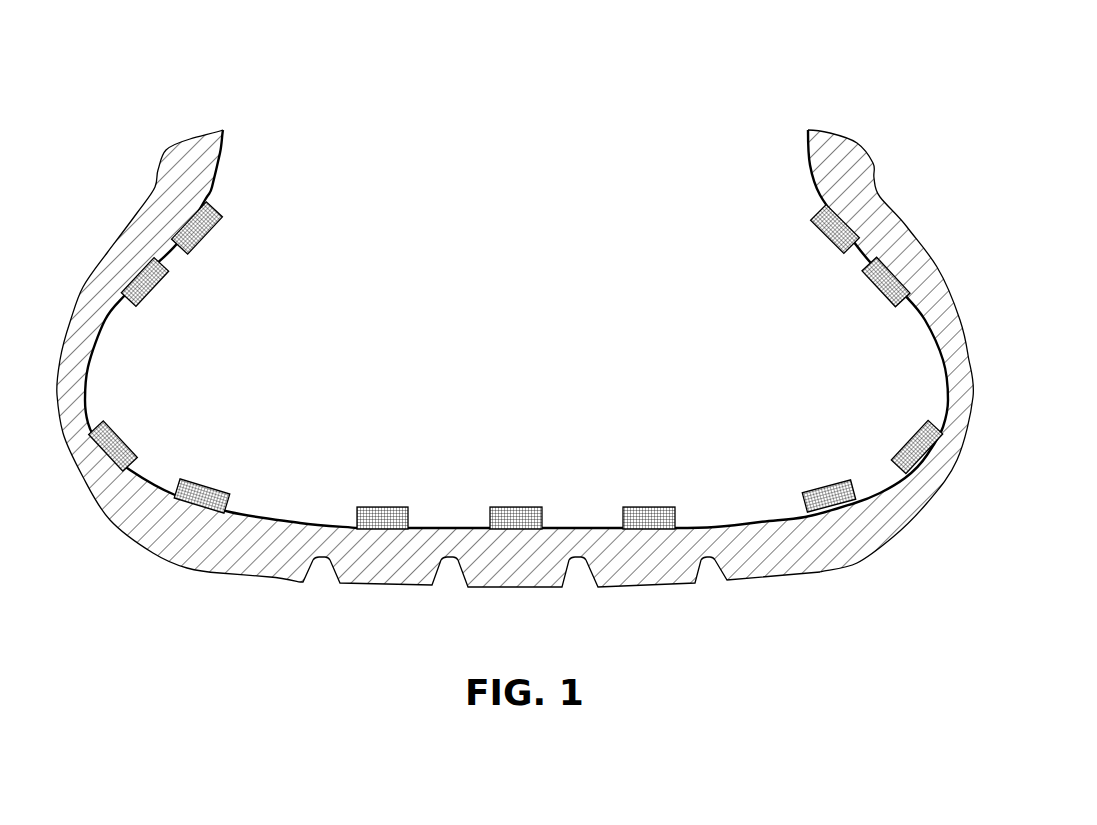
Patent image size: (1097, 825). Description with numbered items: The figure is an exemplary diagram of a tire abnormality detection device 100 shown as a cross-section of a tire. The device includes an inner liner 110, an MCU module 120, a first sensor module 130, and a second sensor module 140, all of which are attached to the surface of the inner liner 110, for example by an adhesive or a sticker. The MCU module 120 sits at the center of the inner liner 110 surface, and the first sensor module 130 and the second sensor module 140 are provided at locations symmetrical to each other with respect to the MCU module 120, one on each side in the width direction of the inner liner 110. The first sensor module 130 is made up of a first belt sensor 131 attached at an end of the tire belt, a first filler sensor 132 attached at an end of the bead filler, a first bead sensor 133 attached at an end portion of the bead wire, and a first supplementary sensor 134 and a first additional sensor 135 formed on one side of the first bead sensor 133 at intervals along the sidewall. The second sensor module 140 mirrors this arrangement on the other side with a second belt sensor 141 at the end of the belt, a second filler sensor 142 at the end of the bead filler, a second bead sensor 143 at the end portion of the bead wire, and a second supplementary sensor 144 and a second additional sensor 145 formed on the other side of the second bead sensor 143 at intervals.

The tire abnormality detection device 100 is at (681, 94).
The inner liner 110 is at (513, 567).
The MCU module 120 is at (512, 506).
The first sensor module 130 is at (293, 297).
The first belt sensor 131 is at (379, 507).
The first filler sensor 132 is at (203, 484).
The first bead sensor 133 is at (118, 437).
The first supplementary sensor 134 is at (157, 292).
The first additional sensor 135 is at (197, 237).
The second sensor module 140 is at (737, 297).
The second belt sensor 141 is at (649, 507).
The second filler sensor 142 is at (827, 484).
The second bead sensor 143 is at (908, 435).
The second supplementary sensor 144 is at (872, 288).
The second additional sensor 145 is at (830, 238).